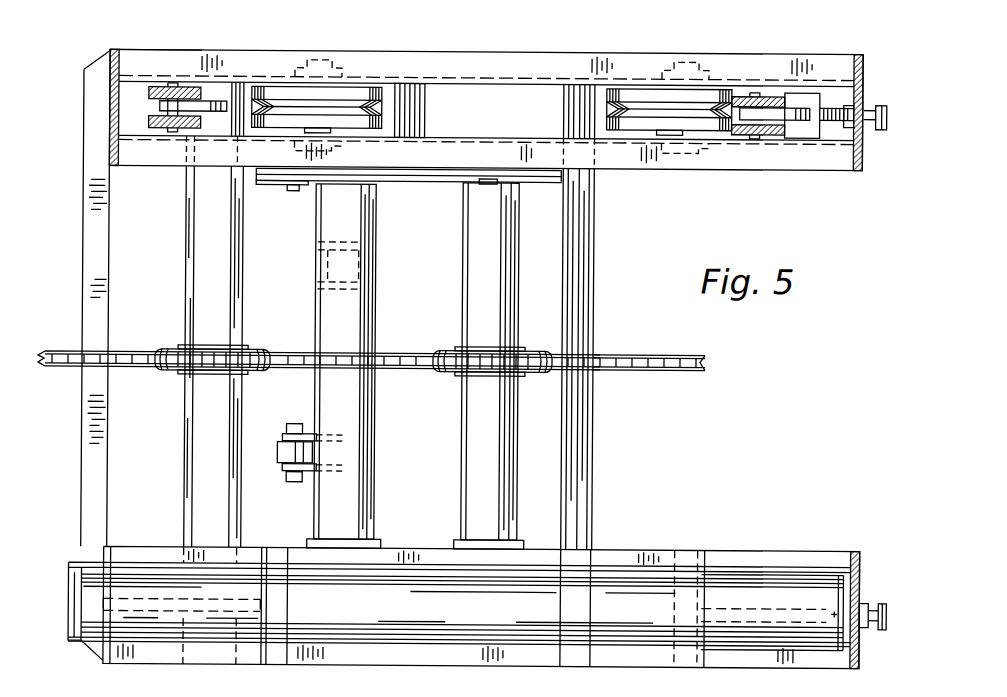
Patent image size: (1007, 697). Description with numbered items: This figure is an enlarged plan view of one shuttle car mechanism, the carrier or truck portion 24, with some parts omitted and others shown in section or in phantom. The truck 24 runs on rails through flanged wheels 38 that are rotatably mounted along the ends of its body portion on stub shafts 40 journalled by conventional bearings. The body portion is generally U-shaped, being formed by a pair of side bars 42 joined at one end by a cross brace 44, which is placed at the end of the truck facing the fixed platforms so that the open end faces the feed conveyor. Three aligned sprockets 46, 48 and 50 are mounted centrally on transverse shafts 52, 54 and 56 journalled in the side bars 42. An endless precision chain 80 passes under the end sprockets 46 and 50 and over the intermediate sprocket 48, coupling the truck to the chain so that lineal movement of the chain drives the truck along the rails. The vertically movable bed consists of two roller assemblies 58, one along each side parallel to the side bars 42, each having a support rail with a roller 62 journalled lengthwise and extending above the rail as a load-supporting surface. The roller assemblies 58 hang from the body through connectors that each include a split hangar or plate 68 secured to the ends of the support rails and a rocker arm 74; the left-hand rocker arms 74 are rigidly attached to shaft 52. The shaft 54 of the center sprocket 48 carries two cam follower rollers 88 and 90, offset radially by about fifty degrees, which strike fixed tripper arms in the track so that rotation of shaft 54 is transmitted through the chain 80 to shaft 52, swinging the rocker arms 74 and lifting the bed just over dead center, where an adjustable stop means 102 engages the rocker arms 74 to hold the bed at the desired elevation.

The carrier or truck portion 24 is at (136, 40).
The wheels 38 is at (392, 97).
The stub shafts 40 is at (320, 50).
The side bars 42 is at (150, 78).
The cross brace 44 is at (100, 214).
The sprocket 46 is at (212, 376).
The sprocket 48 is at (372, 342).
The sprocket 50 is at (490, 376).
The transverse shaft 52 is at (215, 218).
The transverse shaft 54 is at (350, 207).
The transverse shaft 56 is at (478, 268).
The roller assemblies 58 is at (775, 563).
The roller 62 is at (592, 598).
The split hangar or plate 68 is at (772, 100).
The rocker arm 74 is at (795, 121).
The endless precision chain 80 is at (664, 370).
The cam follower roller 88 is at (324, 266).
The cam follower roller 90 is at (284, 422).
The stop means 102 is at (892, 106).